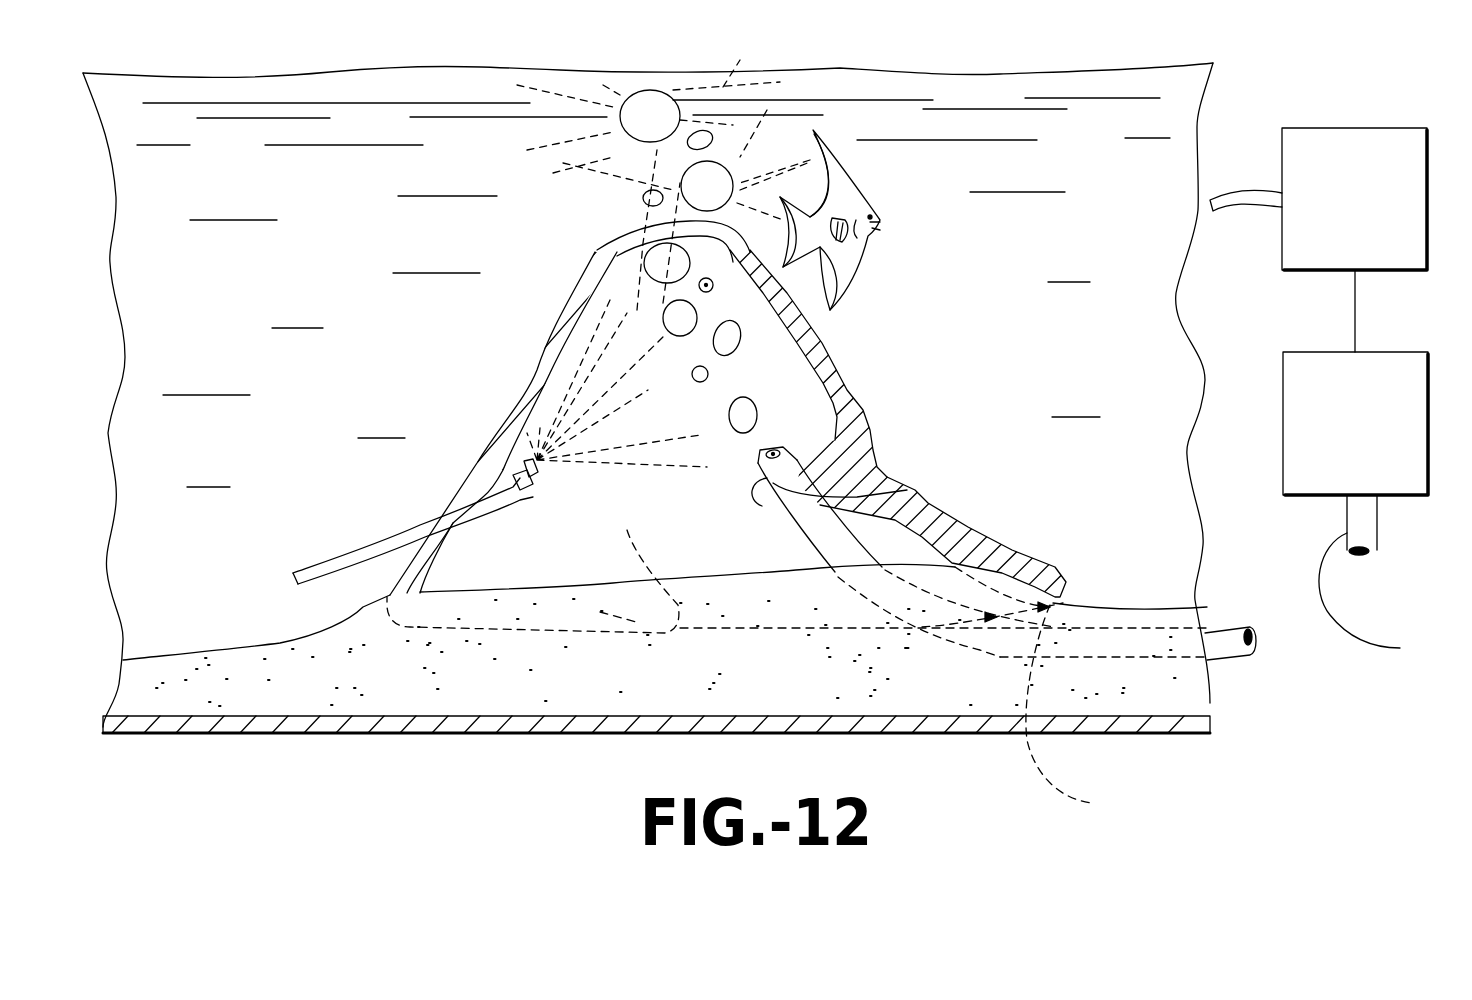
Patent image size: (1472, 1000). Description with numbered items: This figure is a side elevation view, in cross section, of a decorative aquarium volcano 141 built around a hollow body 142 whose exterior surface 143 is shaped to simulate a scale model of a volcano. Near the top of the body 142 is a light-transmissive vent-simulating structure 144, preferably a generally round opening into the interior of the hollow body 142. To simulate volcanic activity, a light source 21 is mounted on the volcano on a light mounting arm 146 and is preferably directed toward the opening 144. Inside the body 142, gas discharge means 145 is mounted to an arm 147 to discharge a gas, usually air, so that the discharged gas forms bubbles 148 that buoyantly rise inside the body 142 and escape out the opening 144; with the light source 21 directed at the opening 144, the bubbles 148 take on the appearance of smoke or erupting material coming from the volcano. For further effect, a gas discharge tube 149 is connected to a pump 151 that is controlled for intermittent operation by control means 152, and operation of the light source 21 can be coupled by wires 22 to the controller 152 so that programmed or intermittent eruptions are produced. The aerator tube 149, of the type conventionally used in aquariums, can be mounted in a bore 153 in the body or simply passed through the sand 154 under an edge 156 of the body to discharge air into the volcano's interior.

The light source 21 is at (533, 478).
The wires 22 is at (1237, 198).
The decorative volcano 141 is at (498, 372).
The hollow body 142 is at (560, 312).
The exterior surface 143 is at (807, 330).
The vent-simulating structure 144 is at (703, 260).
The gas discharge means 145 is at (752, 452).
The light mounting arm 146 is at (533, 497).
The arm 147 is at (763, 503).
The bubbles 148 is at (718, 160).
The gas discharge tube 149 is at (797, 467).
The pump 151 is at (1304, 456).
The control means 152 is at (1303, 238).
The bore 153 is at (887, 477).
The sand 154 is at (280, 692).
The edge 156 is at (1084, 710).